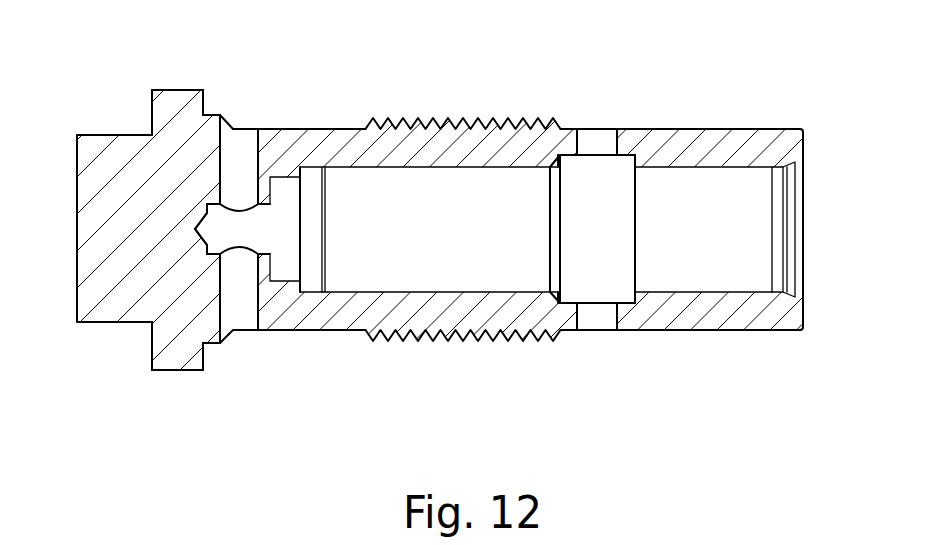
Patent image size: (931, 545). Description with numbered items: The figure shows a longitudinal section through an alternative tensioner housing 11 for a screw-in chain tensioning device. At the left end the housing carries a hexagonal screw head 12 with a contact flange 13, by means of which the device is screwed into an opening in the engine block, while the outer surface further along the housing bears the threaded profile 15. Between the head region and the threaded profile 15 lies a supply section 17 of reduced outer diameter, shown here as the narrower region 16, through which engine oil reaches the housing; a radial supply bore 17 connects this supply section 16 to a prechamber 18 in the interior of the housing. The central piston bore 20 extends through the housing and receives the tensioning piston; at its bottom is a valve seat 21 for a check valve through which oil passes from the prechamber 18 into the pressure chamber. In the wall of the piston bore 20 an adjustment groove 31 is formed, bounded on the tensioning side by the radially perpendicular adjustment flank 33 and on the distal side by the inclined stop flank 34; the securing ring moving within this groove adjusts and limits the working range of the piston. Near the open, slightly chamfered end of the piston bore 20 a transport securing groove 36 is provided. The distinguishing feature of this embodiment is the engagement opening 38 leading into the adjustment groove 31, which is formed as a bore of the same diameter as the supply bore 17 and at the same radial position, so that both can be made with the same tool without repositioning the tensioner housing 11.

The tensioner housing 11 is at (107, 130).
The hexagonal screw head 12 is at (115, 307).
The contact flange 13 is at (178, 98).
The threaded profile 15 is at (447, 118).
The supply section 16 is at (333, 130).
The supply bore 17 is at (248, 308).
The prechamber 18 is at (217, 240).
The piston bore 20 is at (345, 282).
The valve seat 21 is at (286, 195).
The adjustment groove 31 is at (565, 172).
The tensioning-side adjustment flank 33 is at (620, 163).
The inclined distal stop flank 34 is at (557, 160).
The transport securing groove 36 is at (783, 163).
The engagement opening 38 is at (600, 318).